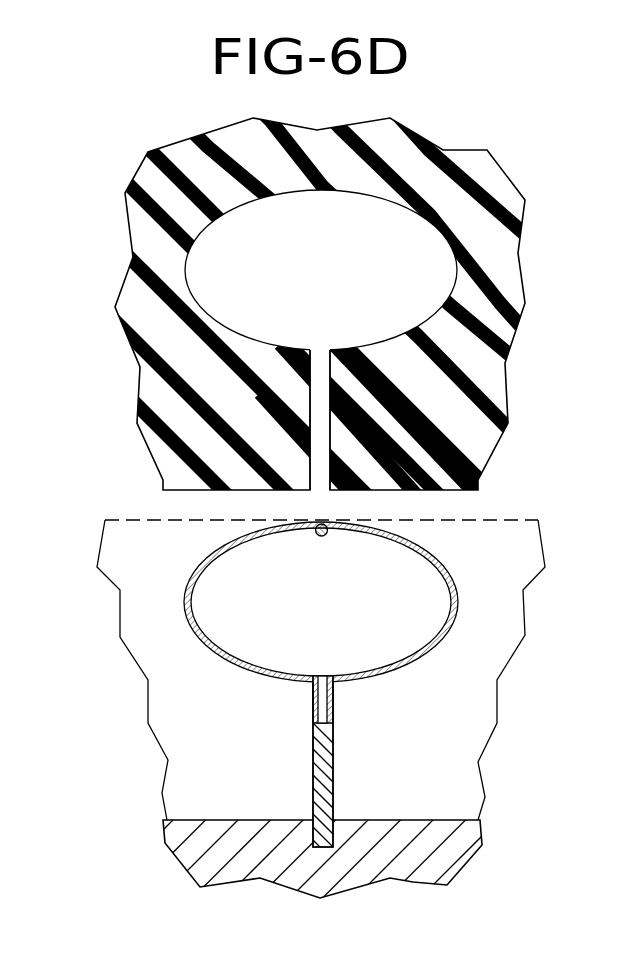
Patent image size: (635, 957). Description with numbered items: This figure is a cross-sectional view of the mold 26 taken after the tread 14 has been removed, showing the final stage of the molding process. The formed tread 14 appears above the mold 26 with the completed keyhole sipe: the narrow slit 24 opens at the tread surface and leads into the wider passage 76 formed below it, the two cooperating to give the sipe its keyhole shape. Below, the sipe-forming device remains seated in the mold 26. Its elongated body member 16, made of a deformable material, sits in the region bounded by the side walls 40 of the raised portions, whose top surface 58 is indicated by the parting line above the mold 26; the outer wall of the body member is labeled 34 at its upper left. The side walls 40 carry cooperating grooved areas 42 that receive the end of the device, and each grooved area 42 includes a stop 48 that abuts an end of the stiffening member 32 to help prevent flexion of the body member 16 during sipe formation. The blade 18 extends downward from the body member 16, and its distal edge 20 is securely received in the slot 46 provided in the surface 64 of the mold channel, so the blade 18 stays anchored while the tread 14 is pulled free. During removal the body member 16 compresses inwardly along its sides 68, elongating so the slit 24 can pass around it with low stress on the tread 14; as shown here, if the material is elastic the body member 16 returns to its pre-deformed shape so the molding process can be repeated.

The tire tread 14 is at (290, 297).
The passage 76 is at (324, 266).
The slit 24 is at (318, 345).
The top surface 58 is at (505, 518).
The outer wall of seal body 34 is at (204, 580).
The stop 48 is at (317, 537).
The stiffening member 32 is at (321, 538).
The sides 68 is at (176, 605).
The grooved areas 42 is at (240, 633).
The body member 16 is at (322, 626).
The side walls 40 is at (460, 703).
The blade 18 is at (317, 772).
The edge 20 is at (330, 848).
The surface 64 is at (190, 820).
The mold 26 is at (172, 872).
The slot 46 is at (313, 834).